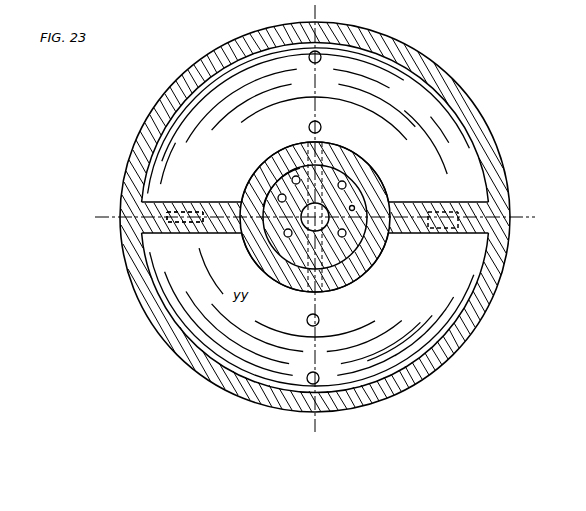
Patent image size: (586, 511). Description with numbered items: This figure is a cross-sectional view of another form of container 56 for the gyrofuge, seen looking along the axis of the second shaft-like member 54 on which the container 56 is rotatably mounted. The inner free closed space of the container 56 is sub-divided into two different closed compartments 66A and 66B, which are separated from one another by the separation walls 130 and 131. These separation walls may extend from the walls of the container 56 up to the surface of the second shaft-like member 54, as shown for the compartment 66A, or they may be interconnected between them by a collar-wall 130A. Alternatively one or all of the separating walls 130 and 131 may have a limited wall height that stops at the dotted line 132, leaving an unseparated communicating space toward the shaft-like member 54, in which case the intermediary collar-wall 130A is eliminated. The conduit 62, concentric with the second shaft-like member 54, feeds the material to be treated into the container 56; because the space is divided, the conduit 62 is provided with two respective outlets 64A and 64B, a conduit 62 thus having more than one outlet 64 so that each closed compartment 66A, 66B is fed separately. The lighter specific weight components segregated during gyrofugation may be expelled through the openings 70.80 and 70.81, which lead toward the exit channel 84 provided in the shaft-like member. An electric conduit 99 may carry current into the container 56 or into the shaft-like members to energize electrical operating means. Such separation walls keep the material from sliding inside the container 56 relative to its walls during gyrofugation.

The container 56 is at (457, 92).
The separation wall 130 is at (444, 166).
The collar-wall 130A is at (373, 248).
The separation wall 131 is at (167, 228).
The dotted line 132 is at (462, 228).
The closed compartment 66A is at (392, 70).
The closed compartment 66B is at (186, 312).
The electric conduit 99 is at (288, 222).
The opening 70.80 is at (320, 373).
The opening 70.81 is at (338, 320).
The outlet 64 is at (333, 158).
The outlet 64A is at (288, 143).
The outlet 64B is at (310, 295).
The exit channel 84 is at (282, 163).
The conduit 62 is at (353, 200).
The second shaft-like member 54 is at (368, 207).